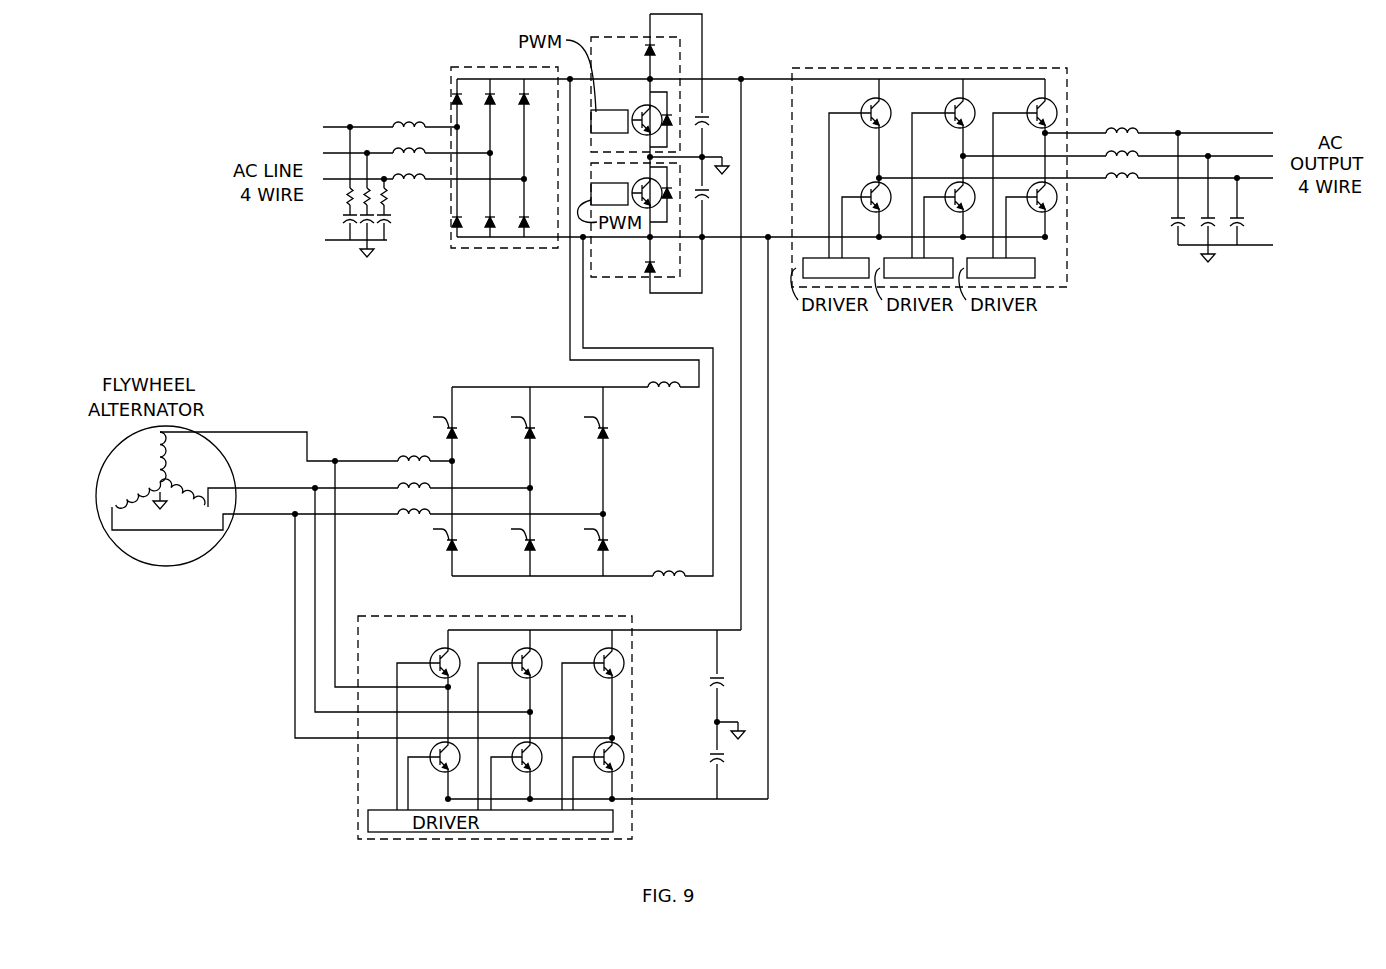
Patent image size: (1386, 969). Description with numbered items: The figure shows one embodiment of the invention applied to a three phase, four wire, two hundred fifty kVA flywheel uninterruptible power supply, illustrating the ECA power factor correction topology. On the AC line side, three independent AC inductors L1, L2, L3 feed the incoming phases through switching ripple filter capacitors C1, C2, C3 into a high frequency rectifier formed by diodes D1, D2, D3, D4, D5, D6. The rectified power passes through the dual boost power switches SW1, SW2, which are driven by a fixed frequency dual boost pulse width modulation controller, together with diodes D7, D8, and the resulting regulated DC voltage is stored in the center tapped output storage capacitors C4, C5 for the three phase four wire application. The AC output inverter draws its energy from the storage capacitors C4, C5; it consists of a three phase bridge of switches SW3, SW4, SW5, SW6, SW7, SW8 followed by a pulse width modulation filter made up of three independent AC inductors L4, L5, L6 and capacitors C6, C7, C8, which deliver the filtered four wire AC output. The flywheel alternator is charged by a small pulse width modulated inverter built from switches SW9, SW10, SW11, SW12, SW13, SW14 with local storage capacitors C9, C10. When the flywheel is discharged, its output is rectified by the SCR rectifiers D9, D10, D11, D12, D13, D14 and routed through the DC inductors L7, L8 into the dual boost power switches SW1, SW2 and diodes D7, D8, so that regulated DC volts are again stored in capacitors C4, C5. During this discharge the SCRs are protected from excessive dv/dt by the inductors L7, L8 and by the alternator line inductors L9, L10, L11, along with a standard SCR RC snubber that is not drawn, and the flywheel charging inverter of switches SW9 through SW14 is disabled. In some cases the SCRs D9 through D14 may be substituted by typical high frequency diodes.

The AC inductor L1 is at (409, 114).
The AC inductor L2 is at (409, 141).
The AC inductor L3 is at (409, 167).
The AC inductor L4 is at (1122, 120).
The AC inductor L5 is at (1110, 145).
The AC inductor L6 is at (1107, 168).
The DC inductor L7 is at (664, 398).
The DC inductor L8 is at (669, 587).
The inductor L9 is at (414, 449).
The inductor L10 is at (414, 476).
The inductor L11 is at (414, 502).
The switching ripple filter C1 is at (335, 227).
The switching ripple filter C2 is at (357, 227).
The switching ripple filter C3 is at (384, 227).
The center tapped output storage capacitor C4 is at (715, 119).
The center tapped output storage capacitor C5 is at (715, 192).
The PWM filter capacitor C6 is at (1167, 232).
The PWM filter capacitor C7 is at (1198, 232).
The PWM filter capacitor C8 is at (1228, 232).
The local storage capacitor C9 is at (703, 689).
The local storage capacitor C10 is at (699, 764).
The high frequency rectifier diode D1 is at (470, 111).
The high frequency rectifier diode D2 is at (470, 210).
The high frequency rectifier diode D3 is at (503, 111).
The high frequency rectifier diode D4 is at (503, 210).
The high frequency rectifier diode D5 is at (537, 111).
The high frequency rectifier diode D6 is at (537, 210).
The dual boost diode D7 is at (636, 50).
The dual boost diode D8 is at (636, 265).
The SCR rectifier D9 is at (458, 431).
The SCR rectifier D10 is at (464, 543).
The SCR rectifier D11 is at (541, 431).
The SCR rectifier D12 is at (541, 543).
The SCR rectifier D13 is at (614, 431).
The SCR rectifier D14 is at (614, 543).
The dual boost power switch SW1 is at (631, 110).
The dual boost power switch SW2 is at (631, 184).
The three phase bridge switch SW3 is at (860, 170).
The three phase bridge switch SW4 is at (866, 220).
The three phase bridge switch SW5 is at (943, 170).
The three phase bridge switch SW6 is at (949, 220).
The three phase bridge switch SW7 is at (1025, 170).
The three phase bridge switch SW8 is at (1031, 220).
The flywheel charging inverter switch SW9 is at (428, 723).
The flywheel charging inverter switch SW10 is at (423, 793).
The flywheel charging inverter switch SW11 is at (505, 723).
The flywheel charging inverter switch SW12 is at (519, 790).
The flywheel charging inverter switch SW13 is at (588, 723).
The flywheel charging inverter switch SW14 is at (600, 790).